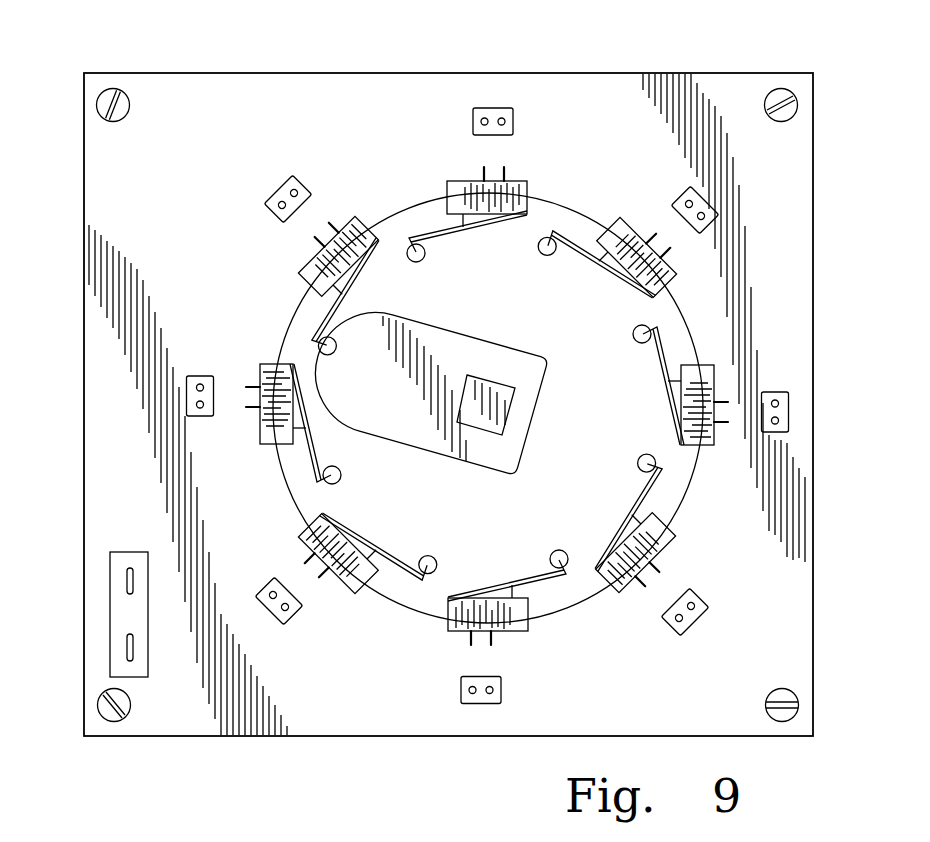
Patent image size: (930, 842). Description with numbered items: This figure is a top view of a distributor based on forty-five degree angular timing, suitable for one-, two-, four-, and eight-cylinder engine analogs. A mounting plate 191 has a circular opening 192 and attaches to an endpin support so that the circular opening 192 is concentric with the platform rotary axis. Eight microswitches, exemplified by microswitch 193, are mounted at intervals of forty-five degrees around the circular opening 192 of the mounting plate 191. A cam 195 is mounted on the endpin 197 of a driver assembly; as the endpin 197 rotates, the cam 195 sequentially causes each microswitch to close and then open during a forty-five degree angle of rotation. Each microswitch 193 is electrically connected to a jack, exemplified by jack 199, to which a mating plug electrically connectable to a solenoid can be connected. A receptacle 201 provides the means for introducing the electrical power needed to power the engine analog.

The mounting plate 191 is at (128, 185).
The circular opening 192 is at (558, 521).
The microswitch 193 is at (697, 395).
The cam 195 is at (446, 345).
The endpin 197 is at (510, 380).
The jack 199 is at (788, 412).
The receptacle 201 is at (110, 610).